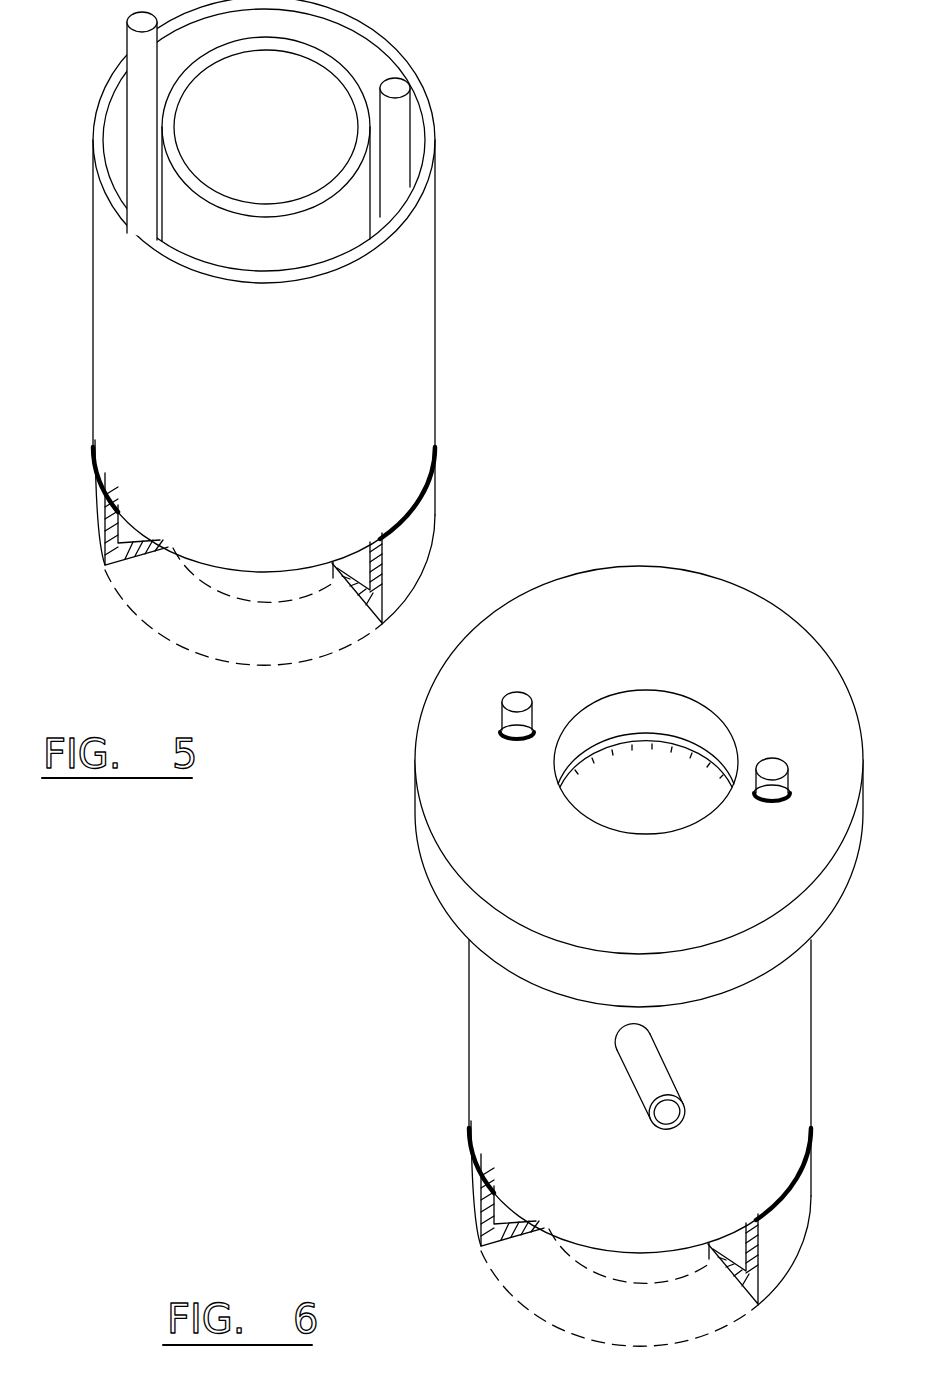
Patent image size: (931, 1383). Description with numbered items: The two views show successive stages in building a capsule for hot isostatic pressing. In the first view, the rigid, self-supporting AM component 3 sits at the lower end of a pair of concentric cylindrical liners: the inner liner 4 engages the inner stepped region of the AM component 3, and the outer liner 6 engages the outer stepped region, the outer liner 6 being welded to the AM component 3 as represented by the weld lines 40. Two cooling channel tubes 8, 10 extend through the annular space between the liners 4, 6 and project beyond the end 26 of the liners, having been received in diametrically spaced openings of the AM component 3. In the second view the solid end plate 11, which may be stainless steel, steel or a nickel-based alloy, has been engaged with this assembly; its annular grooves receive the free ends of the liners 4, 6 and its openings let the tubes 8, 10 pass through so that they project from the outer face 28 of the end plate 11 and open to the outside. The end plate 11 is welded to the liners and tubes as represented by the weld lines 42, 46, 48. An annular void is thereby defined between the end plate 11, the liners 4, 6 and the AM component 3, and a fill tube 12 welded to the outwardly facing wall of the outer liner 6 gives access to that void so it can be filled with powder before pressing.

In FIG. 5, the AM component 3 is at (84, 510).
In FIG. 6, the AM component 3 is at (578, 1212).
In FIG. 5, the inner cylindrical liner 4 is at (272, 214).
In FIG. 5, the outer cylindrical liner 6 is at (358, 263).
In FIG. 5, the cooling channel tube 8 is at (135, 72).
In FIG. 6, the cooling channel tube 8 is at (508, 702).
In FIG. 5, the cooling channel tube 10 is at (400, 128).
In FIG. 6, the cooling channel tube 10 is at (777, 766).
In FIG. 6, the end plate 11 is at (728, 638).
In FIG. 6, the fill tube 12 is at (655, 1075).
In FIG. 5, the end of liners 26 is at (398, 47).
In FIG. 6, the outer face of end plate 28 is at (452, 747).
In FIG. 5, the weld lines 40 is at (95, 445).
In FIG. 6, the weld lines 40 is at (638, 1167).
In FIG. 6, the weld line 42 is at (632, 740).
In FIG. 6, the weld line 46 is at (515, 734).
In FIG. 6, the weld line 48 is at (782, 802).